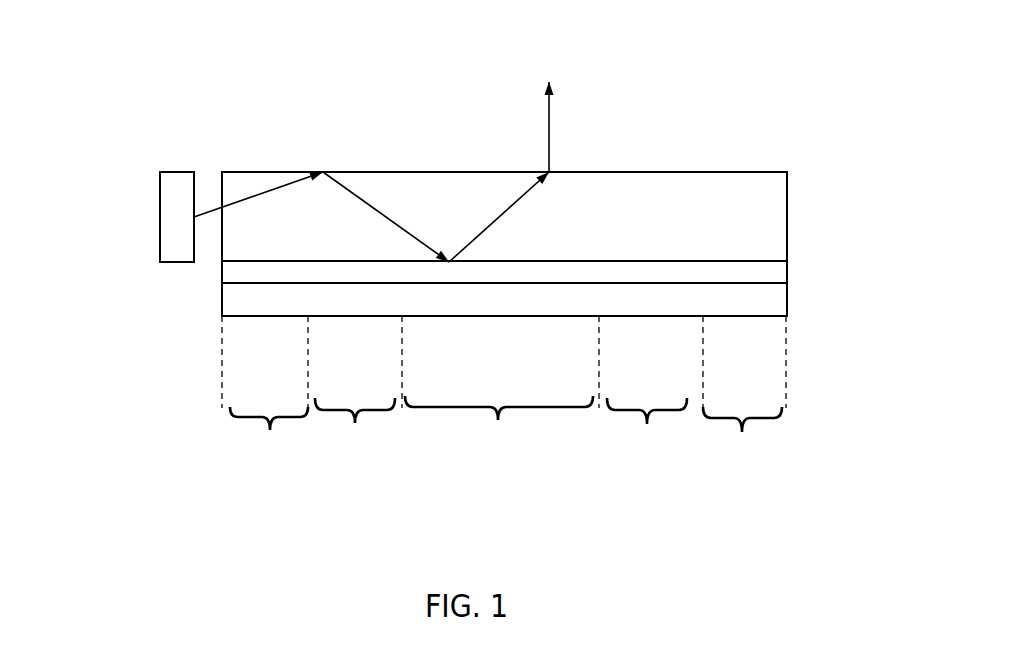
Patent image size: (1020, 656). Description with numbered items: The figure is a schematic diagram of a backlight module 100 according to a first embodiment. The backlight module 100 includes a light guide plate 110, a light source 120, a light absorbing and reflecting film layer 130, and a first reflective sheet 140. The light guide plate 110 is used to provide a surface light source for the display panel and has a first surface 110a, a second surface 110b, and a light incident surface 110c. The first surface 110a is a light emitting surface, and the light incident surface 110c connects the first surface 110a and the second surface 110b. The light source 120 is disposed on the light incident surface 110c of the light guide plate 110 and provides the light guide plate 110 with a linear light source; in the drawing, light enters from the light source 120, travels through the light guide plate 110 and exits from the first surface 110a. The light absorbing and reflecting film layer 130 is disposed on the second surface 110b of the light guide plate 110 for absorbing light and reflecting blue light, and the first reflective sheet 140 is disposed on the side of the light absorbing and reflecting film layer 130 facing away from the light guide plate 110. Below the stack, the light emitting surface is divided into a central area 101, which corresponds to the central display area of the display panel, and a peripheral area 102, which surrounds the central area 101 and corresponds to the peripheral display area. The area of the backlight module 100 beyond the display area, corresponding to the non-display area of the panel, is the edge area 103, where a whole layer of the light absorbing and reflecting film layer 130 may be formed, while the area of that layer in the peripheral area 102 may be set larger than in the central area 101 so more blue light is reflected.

The backlight module 100 is at (488, 32).
The light guide plate 110 is at (773, 206).
The first surface 110a is at (617, 172).
The second surface 110b is at (662, 261).
The light incident surface 110c is at (222, 188).
The light source 120 is at (175, 194).
The light absorbing and reflecting film layer 130 is at (773, 275).
The first reflective sheet 140 is at (773, 300).
The central area 101 is at (500, 387).
The peripheral area 102 is at (505, 389).
The edge area 103 is at (504, 394).